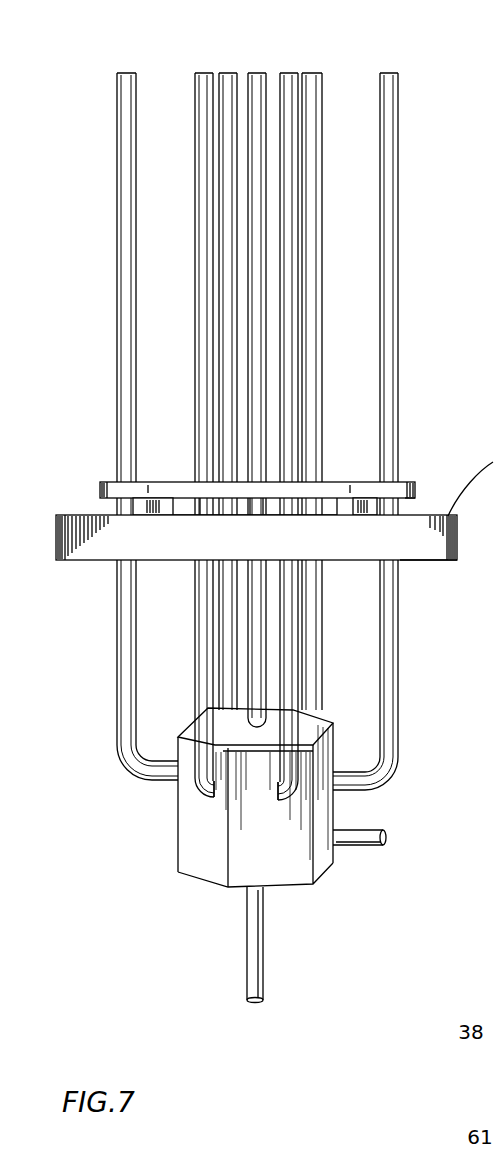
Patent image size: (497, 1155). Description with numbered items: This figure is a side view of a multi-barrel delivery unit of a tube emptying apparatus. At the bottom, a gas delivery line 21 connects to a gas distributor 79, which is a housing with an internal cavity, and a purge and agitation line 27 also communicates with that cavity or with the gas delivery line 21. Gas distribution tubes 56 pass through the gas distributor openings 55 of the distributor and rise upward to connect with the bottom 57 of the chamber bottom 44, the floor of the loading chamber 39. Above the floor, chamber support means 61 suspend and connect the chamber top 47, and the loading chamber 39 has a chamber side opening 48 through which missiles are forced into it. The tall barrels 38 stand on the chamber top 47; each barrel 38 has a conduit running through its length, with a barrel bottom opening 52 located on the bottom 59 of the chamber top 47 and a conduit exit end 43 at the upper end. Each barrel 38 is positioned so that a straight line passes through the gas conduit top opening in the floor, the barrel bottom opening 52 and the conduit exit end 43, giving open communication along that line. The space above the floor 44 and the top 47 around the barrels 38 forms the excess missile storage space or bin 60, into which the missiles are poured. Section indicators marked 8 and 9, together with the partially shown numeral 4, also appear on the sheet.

The excess missile storage space or bin 60 is at (82, 241).
The barrels 38 is at (318, 254).
The conduit exit end 43 is at (388, 73).
The chamber bottom 44 is at (496, 21).
The gas distribution tubes 56 is at (117, 665).
The bottom of the chamber top 59 is at (102, 498).
The chamber top 47 is at (418, 490).
The barrel bottom opening 52 is at (408, 500).
The chamber support means 61 is at (157, 508).
The chamber side opening 48 is at (212, 500).
The loading chamber 39 is at (303, 507).
The lower plate 4 is at (457, 543).
The bottom of the chamber bottom 57 is at (420, 562).
The gas distributor 79 is at (197, 862).
The gas distributor openings 55 is at (275, 803).
The purge and agitation line 27 is at (378, 848).
The gas delivery line 21 is at (246, 960).
The section line 8 is at (36, 802).
The section line 9 is at (30, 497).